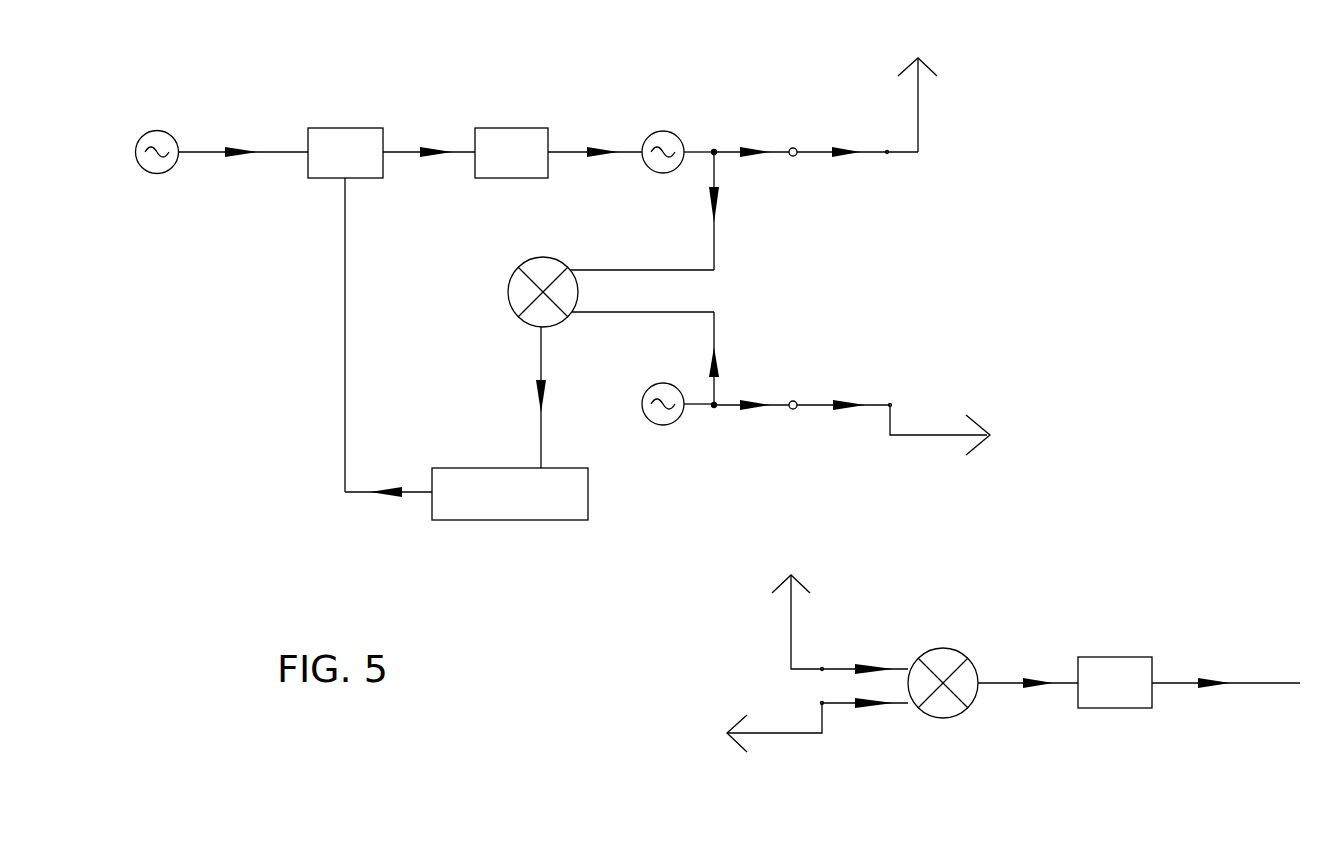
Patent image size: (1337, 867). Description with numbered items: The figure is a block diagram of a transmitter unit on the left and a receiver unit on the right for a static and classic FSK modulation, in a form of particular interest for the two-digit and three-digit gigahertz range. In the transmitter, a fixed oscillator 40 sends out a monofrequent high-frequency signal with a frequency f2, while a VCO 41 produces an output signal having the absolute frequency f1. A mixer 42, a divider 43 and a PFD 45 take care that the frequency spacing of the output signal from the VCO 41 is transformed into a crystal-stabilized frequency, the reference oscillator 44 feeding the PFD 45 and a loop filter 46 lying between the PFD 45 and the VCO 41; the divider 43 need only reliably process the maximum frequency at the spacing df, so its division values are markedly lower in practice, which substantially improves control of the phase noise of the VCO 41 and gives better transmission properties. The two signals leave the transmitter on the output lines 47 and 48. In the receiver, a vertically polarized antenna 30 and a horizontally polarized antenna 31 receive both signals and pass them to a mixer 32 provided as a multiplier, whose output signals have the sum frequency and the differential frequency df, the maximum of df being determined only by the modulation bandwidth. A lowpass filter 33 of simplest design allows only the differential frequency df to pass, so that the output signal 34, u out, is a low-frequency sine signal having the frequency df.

The vertically polarized antenna 30 is at (815, 583).
The horizontally polarized antenna 31 is at (778, 748).
The mixer 32 is at (947, 708).
The lowpass filter 33 is at (1100, 700).
The output signal u_out 34 is at (1243, 688).
The fixed oscillator 40 is at (665, 435).
The VCO 41 is at (667, 130).
The mixer 42 is at (513, 305).
The divider 43 is at (475, 470).
The reference oscillator XCO 44 is at (203, 180).
The PFD 45 is at (333, 130).
The loop filter F(s) 46 is at (505, 128).
The output line for frequency f1 47 is at (896, 60).
The output line for frequency f2 48 is at (915, 443).